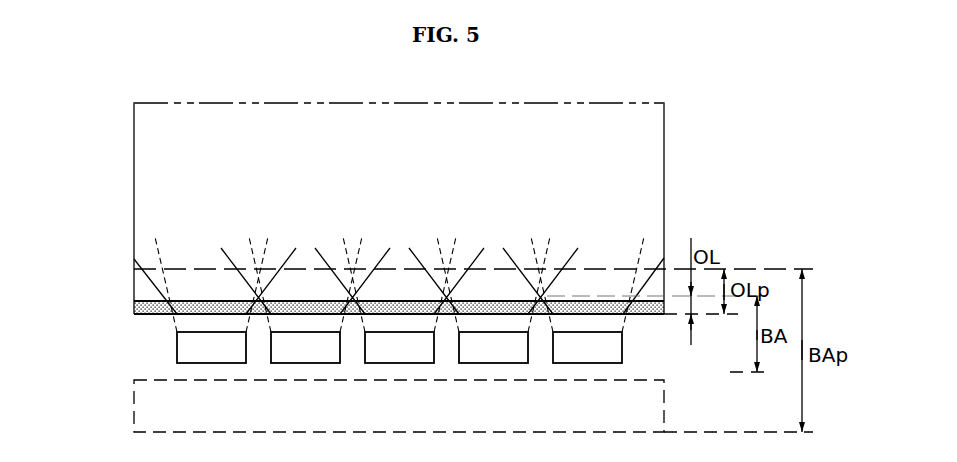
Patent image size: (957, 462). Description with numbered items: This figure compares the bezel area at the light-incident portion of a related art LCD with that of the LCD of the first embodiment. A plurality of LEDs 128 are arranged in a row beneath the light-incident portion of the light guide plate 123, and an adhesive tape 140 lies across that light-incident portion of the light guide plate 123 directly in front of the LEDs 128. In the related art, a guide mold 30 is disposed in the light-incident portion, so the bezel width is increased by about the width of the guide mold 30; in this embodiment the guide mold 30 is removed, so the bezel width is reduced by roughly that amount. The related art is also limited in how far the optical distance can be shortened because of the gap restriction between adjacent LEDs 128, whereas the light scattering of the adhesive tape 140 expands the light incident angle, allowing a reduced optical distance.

The light guide plate 123 is at (134, 207).
The adhesive tape 140 is at (134, 309).
The LEDs 128 is at (177, 343).
The guide mold 30 is at (408, 418).